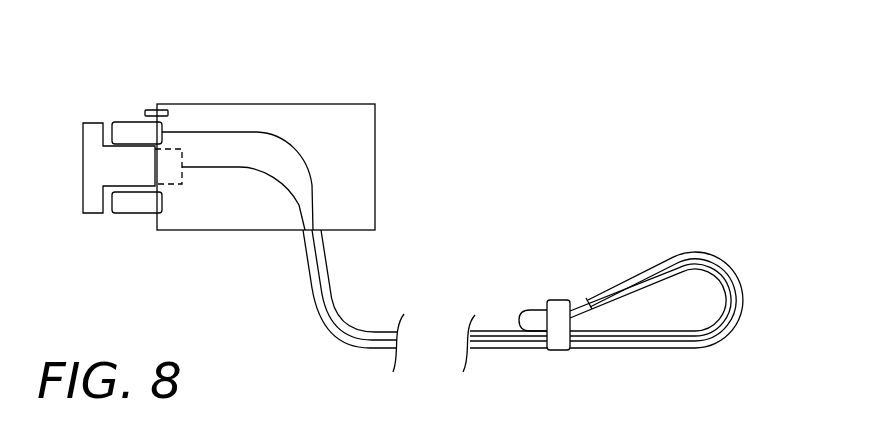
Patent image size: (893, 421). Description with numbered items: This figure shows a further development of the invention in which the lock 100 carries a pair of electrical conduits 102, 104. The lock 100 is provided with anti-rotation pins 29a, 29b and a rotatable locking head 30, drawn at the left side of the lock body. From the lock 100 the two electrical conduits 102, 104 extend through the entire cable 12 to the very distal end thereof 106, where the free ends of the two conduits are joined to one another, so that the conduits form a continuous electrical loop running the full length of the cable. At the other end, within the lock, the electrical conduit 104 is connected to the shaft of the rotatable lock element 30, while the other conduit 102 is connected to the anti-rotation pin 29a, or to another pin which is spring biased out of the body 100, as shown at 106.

The cable 12 is at (308, 268).
The anti-rotation pin 29a is at (127, 122).
The anti-rotation pin 29b is at (135, 213).
The rotatable locking head 30 is at (97, 175).
The lock 100 is at (357, 113).
The electrical conduit 102 is at (257, 132).
The electrical conduit 104 is at (285, 184).
The distal end of cable 106 is at (152, 110).